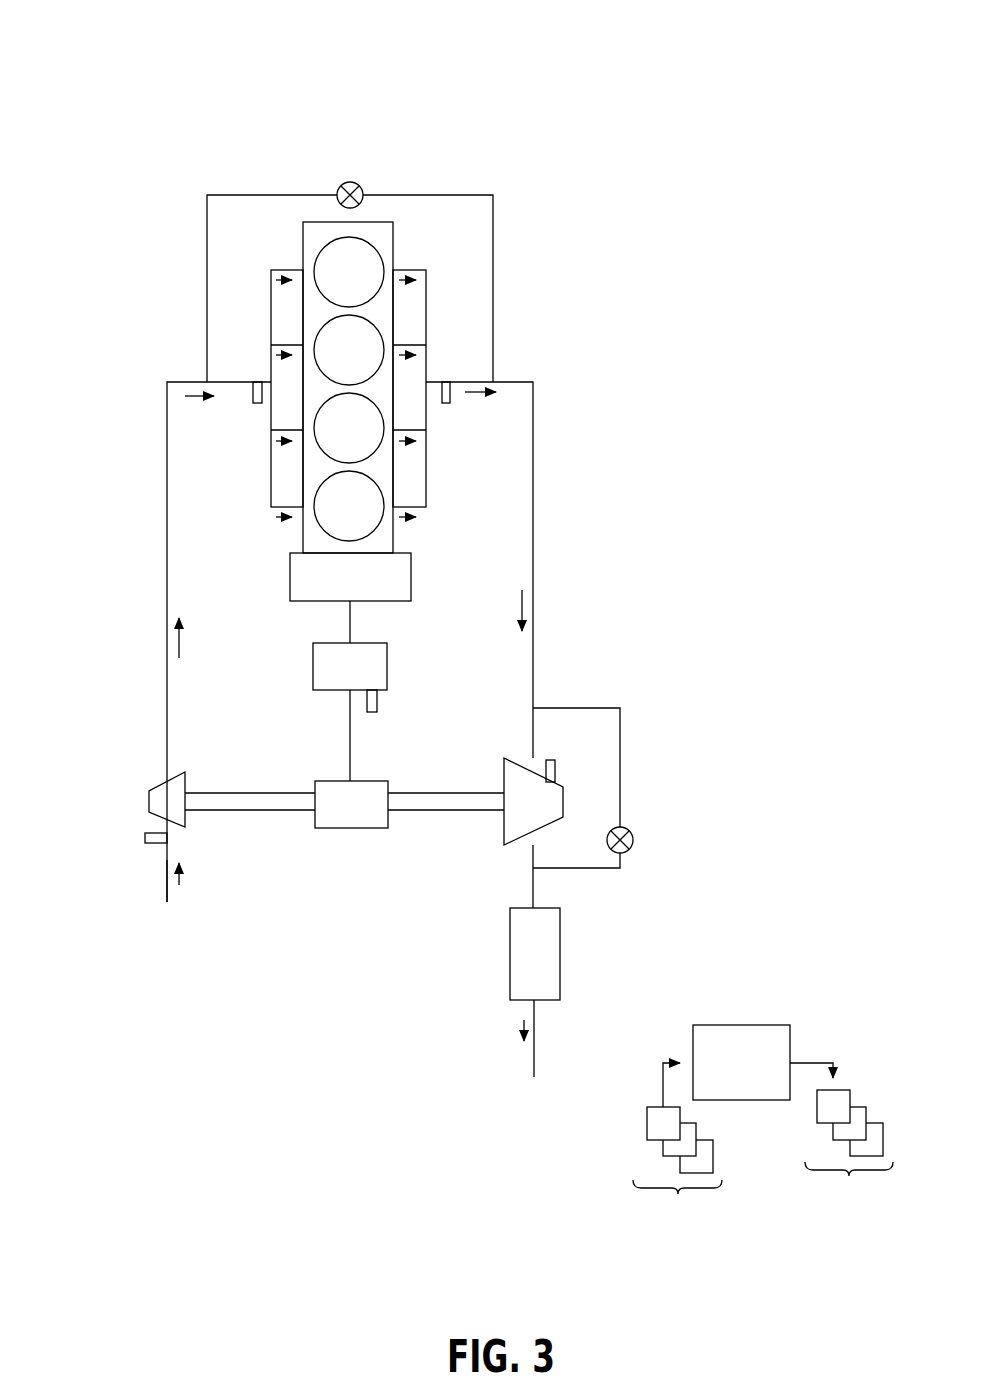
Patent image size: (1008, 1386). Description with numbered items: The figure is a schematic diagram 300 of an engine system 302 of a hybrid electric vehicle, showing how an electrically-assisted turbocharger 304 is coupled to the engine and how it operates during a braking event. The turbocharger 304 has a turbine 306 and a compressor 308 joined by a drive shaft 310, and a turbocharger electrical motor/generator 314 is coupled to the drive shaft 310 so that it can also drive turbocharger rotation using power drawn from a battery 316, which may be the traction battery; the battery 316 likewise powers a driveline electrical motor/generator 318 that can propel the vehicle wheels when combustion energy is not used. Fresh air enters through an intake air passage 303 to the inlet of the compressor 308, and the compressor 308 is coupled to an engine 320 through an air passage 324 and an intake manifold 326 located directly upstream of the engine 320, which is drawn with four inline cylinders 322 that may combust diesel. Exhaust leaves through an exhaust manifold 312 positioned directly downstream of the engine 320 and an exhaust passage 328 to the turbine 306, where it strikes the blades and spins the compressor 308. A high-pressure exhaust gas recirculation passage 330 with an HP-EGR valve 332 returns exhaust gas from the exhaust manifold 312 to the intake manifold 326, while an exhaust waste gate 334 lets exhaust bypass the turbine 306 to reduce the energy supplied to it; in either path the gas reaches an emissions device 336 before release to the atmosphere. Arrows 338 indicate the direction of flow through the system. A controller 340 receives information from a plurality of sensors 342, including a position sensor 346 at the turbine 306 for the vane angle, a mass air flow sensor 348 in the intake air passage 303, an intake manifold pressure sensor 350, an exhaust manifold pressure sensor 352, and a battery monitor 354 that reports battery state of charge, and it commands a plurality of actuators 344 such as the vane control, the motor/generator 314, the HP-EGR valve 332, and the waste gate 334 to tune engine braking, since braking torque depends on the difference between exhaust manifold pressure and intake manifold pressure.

The schematic diagram 300 is at (118, 52).
The engine system 302 is at (547, 140).
The intake air passage 303 is at (165, 861).
The turbocharger 304 is at (298, 930).
The turbine 306 is at (504, 778).
The compressor 308 is at (185, 772).
The drive shaft 310 is at (208, 793).
The exhaust manifold 312 is at (523, 340).
The turbocharger electrical motor/generator 314 is at (351, 804).
The battery 316 is at (350, 712).
The driveline electrical motor/generator 318 is at (350, 598).
The engine 320 is at (395, 250).
The cylinders 322 is at (321, 252).
The air passage 324 is at (167, 567).
The intake manifold 326 is at (235, 473).
The exhaust passage 328 is at (535, 462).
The high-pressure exhaust gas recirculation passage 330 is at (495, 266).
The HP-EGR valve 332 is at (343, 185).
The exhaust waste gate 334 is at (632, 850).
The emissions device 336 is at (558, 908).
The arrows 338 is at (487, 394).
The controller 340 is at (741, 1062).
The plurality of sensors 342 is at (677, 1153).
The plurality of actuators 344 is at (845, 1143).
The position sensor 346 is at (552, 760).
The mass air flow sensor 348 is at (145, 835).
The intake manifold pressure sensor 350 is at (257, 404).
The exhaust manifold pressure sensor 352 is at (445, 404).
The battery monitor 354 is at (378, 702).